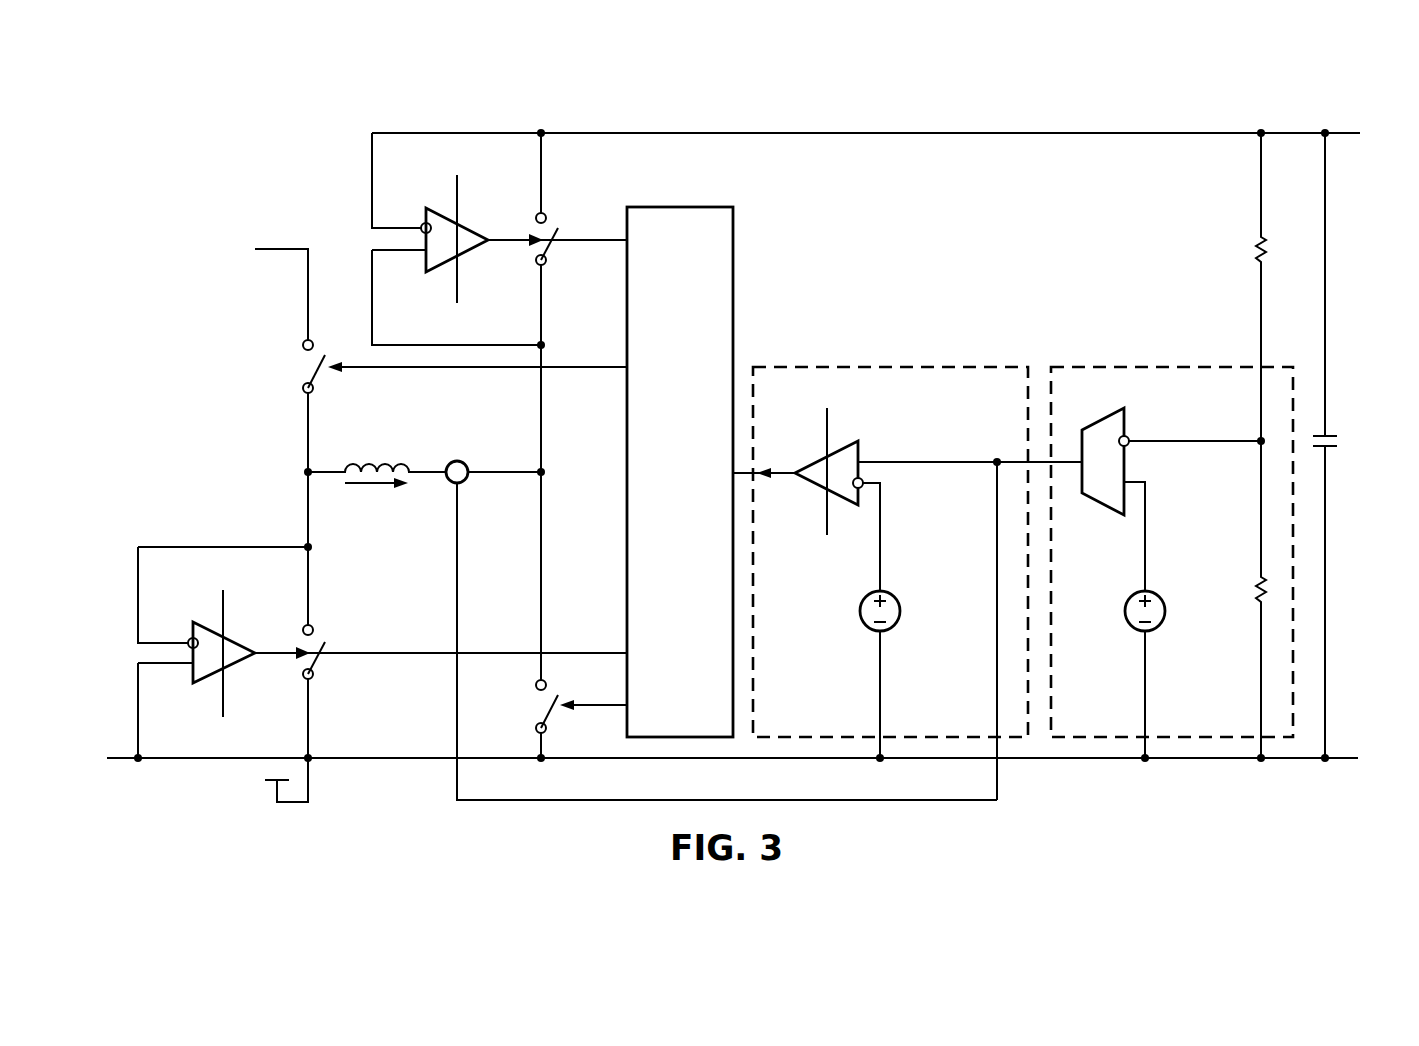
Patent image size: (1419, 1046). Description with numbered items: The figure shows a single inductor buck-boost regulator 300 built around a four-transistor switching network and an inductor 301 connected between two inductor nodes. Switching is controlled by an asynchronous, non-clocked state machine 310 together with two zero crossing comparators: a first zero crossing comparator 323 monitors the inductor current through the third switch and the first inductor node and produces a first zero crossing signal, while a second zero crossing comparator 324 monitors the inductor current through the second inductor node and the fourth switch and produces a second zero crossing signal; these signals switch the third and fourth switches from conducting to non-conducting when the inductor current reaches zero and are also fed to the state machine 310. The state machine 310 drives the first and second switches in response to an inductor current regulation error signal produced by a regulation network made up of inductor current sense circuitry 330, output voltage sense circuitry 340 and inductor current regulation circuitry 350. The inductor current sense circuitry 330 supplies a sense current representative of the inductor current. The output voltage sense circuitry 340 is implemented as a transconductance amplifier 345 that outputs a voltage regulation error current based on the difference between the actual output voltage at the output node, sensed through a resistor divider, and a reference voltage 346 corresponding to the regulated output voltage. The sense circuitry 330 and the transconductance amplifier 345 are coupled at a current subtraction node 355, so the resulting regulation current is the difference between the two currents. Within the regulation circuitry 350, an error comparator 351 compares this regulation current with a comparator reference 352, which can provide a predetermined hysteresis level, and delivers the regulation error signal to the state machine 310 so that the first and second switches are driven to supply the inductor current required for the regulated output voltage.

The single inductor buck-boost regulator 300 is at (258, 119).
The inductor 301 is at (355, 452).
The state machine 310 is at (660, 519).
The zero crossing comparator 323 is at (240, 664).
The zero crossing comparator 324 is at (473, 254).
The IL sense circuitry 330 is at (449, 460).
The VOUT sense circuitry 340 is at (1186, 358).
The transconductance amplifier 345 is at (1103, 508).
The reference voltage 346 is at (1165, 611).
The IL regulation circuitry 350 is at (893, 358).
The error comparator 351 is at (815, 465).
The comparator reference 352 is at (900, 611).
The current subtraction node 355 is at (995, 455).